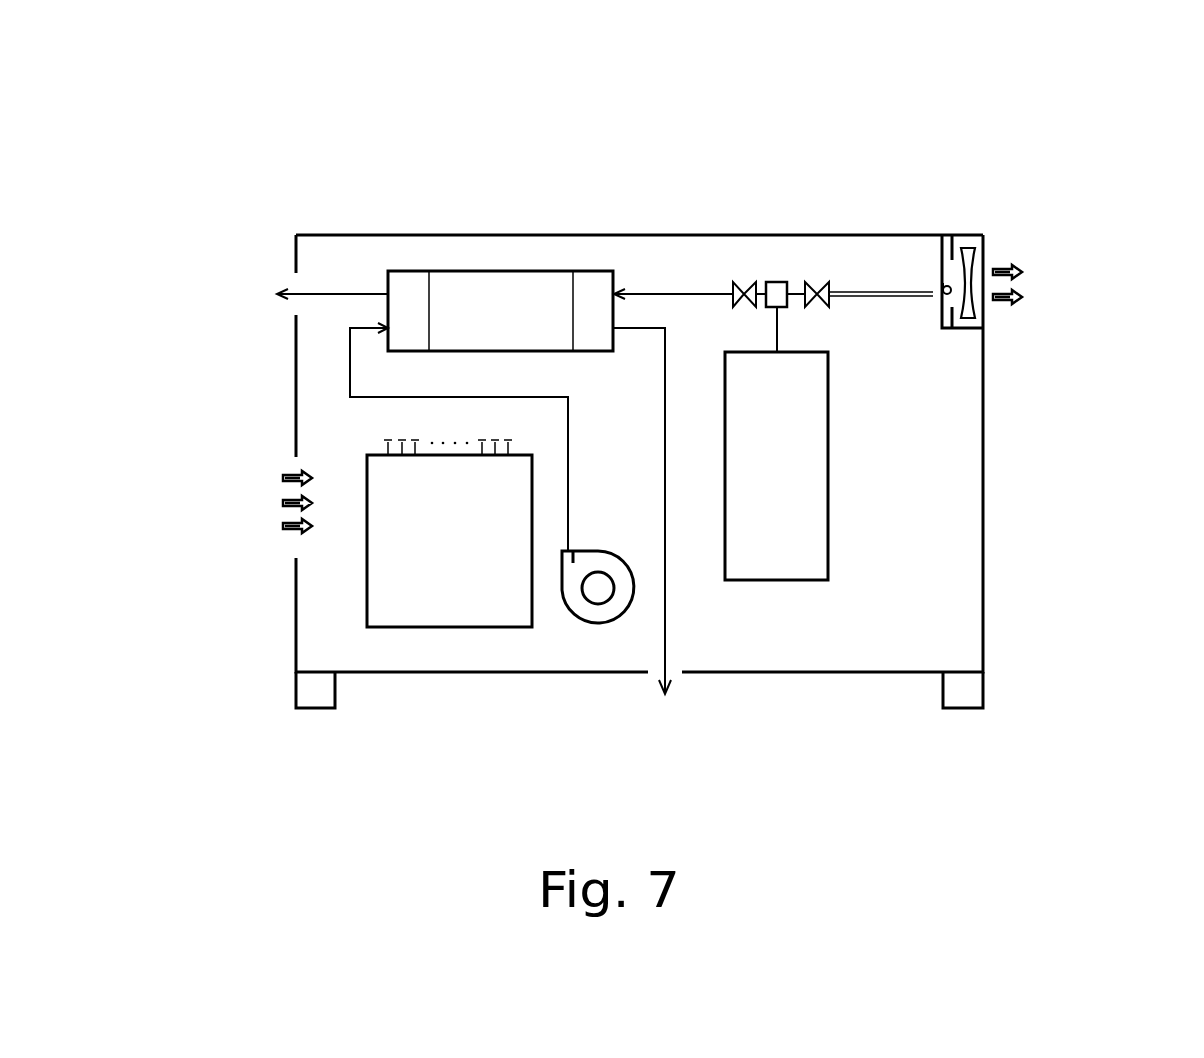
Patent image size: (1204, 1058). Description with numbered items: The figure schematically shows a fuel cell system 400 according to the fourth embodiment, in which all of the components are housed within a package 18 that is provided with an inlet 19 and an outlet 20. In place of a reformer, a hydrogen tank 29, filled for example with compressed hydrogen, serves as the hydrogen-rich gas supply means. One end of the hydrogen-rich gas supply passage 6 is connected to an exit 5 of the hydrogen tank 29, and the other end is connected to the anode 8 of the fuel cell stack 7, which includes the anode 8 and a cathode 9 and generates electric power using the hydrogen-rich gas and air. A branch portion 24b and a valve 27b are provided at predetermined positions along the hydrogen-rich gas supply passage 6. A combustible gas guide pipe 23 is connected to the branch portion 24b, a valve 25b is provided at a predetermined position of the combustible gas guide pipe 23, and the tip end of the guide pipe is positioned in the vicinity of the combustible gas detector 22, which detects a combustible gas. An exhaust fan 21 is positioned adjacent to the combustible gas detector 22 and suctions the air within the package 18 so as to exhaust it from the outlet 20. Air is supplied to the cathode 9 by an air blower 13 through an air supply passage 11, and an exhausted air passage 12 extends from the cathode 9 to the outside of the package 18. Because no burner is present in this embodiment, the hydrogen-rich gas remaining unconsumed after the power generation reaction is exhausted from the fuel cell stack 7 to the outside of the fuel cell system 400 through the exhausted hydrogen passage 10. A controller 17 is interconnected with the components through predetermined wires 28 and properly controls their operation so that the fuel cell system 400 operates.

The fuel cell system 400 is at (1128, 146).
The exit 5 is at (778, 348).
The hydrogen-rich gas supply passage 6 is at (777, 320).
The fuel cell stack 7 is at (486, 271).
The anode 8 is at (592, 271).
The cathode 9 is at (408, 271).
The exhausted hydrogen passage 10 is at (665, 607).
The air supply passage 11 is at (380, 399).
The exhausted air passage 12 is at (325, 293).
The air blower 13 is at (598, 628).
The controller 17 is at (463, 628).
The package 18 is at (295, 622).
The inlet 19 is at (295, 542).
The outlet 20 is at (982, 270).
The exhaust fan 21 is at (972, 248).
The combustible gas detector 22 is at (943, 290).
The combustible gas guide pipe 23 is at (862, 291).
The branch portion 24b is at (777, 282).
The valve 25b is at (818, 282).
The valve 27b is at (744, 282).
The wires 28 is at (383, 443).
The hydrogen tank 29 is at (828, 457).